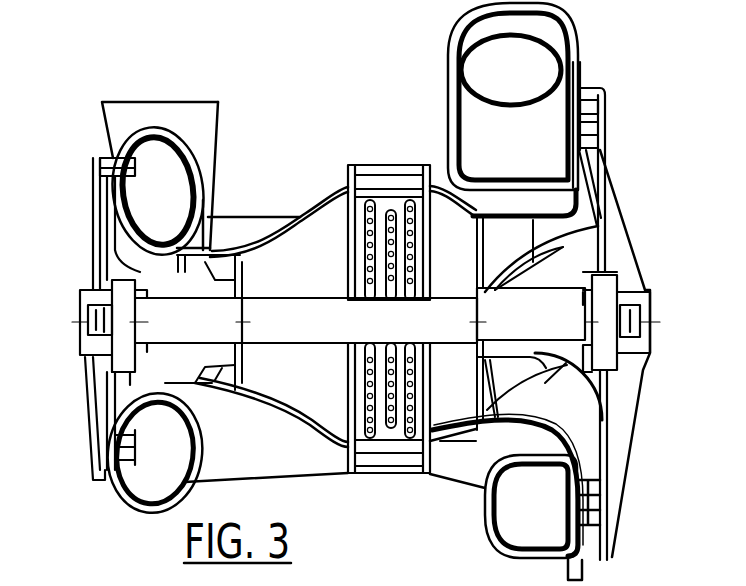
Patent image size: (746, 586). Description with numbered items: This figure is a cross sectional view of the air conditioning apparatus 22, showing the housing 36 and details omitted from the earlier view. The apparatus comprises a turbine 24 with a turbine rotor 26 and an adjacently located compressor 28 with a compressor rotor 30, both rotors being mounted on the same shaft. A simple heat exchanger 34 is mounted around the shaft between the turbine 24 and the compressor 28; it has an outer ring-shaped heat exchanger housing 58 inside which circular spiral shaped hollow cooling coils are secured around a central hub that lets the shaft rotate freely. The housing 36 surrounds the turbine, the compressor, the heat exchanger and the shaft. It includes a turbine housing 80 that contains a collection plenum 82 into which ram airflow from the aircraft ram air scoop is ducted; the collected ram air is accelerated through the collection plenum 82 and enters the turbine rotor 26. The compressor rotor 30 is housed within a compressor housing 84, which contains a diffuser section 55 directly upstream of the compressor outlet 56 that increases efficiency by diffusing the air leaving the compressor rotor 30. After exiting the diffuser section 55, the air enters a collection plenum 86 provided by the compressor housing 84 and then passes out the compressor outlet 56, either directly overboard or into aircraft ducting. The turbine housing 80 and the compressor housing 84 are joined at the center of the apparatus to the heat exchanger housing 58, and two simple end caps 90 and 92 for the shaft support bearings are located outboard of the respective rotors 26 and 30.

The air conditioning apparatus 22 is at (378, 487).
The turbine 24 is at (213, 382).
The turbine rotor 26 is at (246, 262).
The compressor 28 is at (553, 431).
The compressor rotor 30 is at (476, 438).
The heat exchanger 34 is at (355, 370).
The housing 36 is at (337, 186).
The diffuser section 55 is at (592, 104).
The compressor outlet 56 is at (563, 50).
The heat exchanger housing 58 is at (390, 167).
The turbine housing 80 is at (216, 225).
The collection plenum 82 is at (86, 386).
The compressor housing 84 is at (612, 525).
The collection plenum 86 is at (483, 146).
The end cap 90 is at (78, 336).
The end cap 92 is at (626, 290).